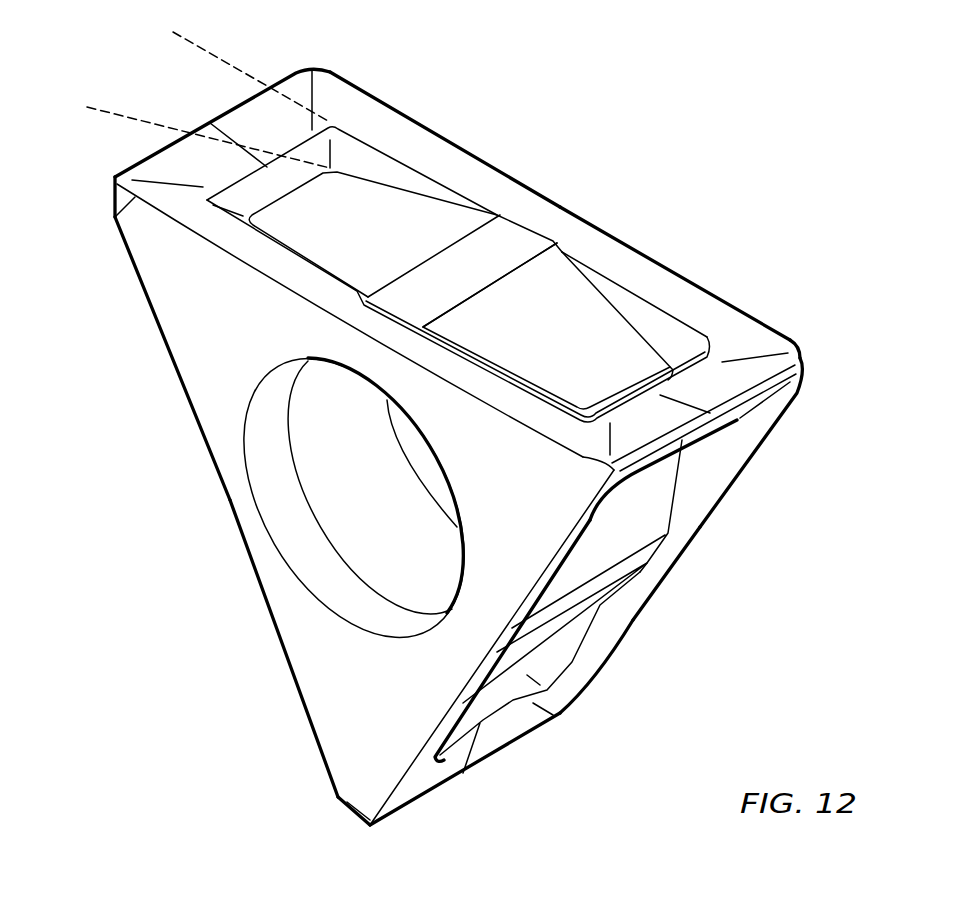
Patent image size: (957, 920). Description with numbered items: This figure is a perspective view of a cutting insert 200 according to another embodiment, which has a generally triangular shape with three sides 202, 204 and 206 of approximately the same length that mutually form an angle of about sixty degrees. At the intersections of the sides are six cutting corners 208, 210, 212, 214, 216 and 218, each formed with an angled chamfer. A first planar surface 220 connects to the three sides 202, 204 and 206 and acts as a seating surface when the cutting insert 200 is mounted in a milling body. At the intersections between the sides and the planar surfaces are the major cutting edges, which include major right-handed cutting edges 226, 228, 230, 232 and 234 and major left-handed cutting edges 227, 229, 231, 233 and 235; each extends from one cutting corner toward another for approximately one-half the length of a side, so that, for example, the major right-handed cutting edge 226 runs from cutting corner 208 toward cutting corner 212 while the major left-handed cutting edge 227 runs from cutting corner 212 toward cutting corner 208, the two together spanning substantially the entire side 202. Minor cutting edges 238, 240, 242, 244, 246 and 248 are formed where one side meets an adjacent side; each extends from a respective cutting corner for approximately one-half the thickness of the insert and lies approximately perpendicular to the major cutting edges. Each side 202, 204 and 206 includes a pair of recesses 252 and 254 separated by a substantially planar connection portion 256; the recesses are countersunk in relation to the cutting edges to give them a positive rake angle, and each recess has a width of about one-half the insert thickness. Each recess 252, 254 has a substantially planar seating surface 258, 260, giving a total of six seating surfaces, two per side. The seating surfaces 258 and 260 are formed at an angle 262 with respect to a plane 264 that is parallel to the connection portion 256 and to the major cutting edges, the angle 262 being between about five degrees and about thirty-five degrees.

The cutting insert 200 is at (776, 93).
The side 202 is at (559, 298).
The side 204 is at (203, 540).
The side 206 is at (584, 665).
The cutting corner 208 is at (105, 178).
The cutting corner 210 is at (371, 837).
The cutting corner 212 is at (583, 460).
The cutting corner 214 is at (313, 61).
The cutting corner 216 is at (575, 722).
The cutting corner 218 is at (815, 350).
The first planar surface 220 is at (177, 282).
The major right-handed cutting edge 226 is at (328, 313).
The major left-handed cutting edge 227 is at (452, 384).
The major right-handed cutting edge 228 is at (560, 560).
The major left-handed cutting edge 229 is at (480, 663).
The major right-handed cutting edge 230 is at (277, 643).
The major left-handed cutting edge 231 is at (162, 343).
The major right-handed cutting edge 232 is at (687, 273).
The major left-handed cutting edge 233 is at (483, 157).
The major right-handed cutting edge 234 is at (640, 618).
The major left-handed cutting edge 235 is at (767, 443).
The minor cutting edge 238 is at (143, 157).
The minor cutting edge 240 is at (257, 95).
The minor cutting edge 242 is at (697, 473).
The minor cutting edge 244 is at (770, 387).
The minor cutting edge 246 is at (413, 810).
The minor cutting edge 248 is at (497, 760).
The recess 252 is at (364, 198).
The recess 254 is at (670, 342).
The connection portion 256 is at (510, 253).
The seating surface 258 is at (383, 237).
The seating surface 260 is at (652, 348).
The angle 262 is at (191, 48).
The plane 264 is at (180, 33).